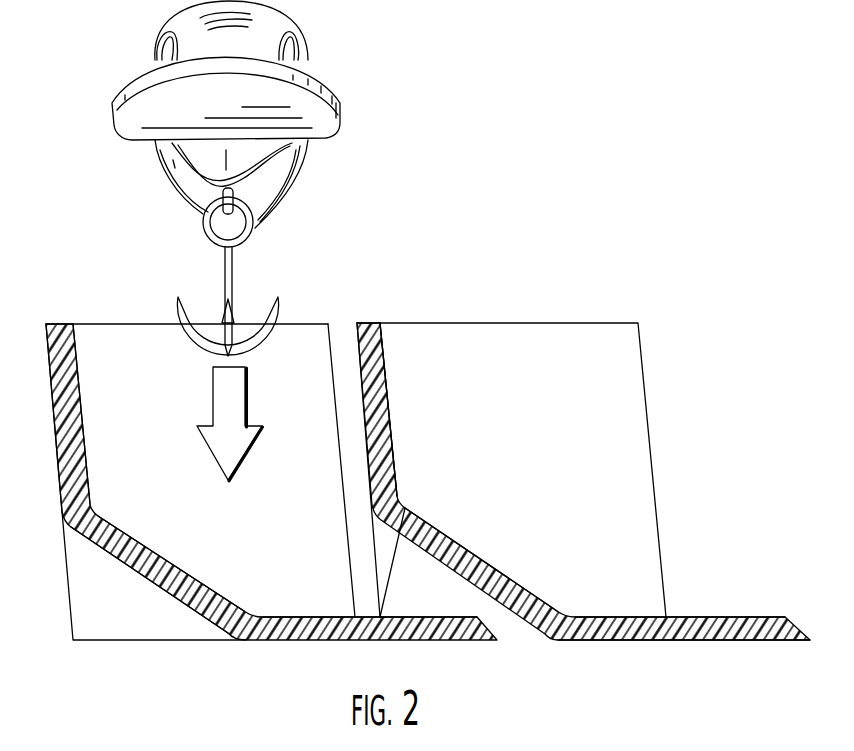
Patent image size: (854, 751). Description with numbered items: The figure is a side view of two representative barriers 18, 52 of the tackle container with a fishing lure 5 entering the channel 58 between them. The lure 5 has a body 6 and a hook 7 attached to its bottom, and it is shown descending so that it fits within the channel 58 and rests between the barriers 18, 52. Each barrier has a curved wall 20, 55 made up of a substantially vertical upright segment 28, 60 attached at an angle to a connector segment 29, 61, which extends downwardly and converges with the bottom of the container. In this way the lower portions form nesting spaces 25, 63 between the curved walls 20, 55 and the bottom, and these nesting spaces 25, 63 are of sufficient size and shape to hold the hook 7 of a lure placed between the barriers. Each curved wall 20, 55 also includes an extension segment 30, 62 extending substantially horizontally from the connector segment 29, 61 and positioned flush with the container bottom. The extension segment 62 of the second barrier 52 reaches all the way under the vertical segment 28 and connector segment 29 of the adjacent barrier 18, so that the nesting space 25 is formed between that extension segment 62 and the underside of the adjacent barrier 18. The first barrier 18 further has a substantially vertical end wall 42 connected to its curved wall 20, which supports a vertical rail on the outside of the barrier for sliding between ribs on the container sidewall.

The fishing lure 5 is at (336, 58).
The body 6 is at (182, 182).
The hook 7 is at (230, 277).
The channel 58 is at (342, 322).
The end wall 42 is at (463, 322).
The vertical segment 60 is at (80, 405).
The curved wall 55 is at (112, 527).
The connector segment 61 is at (183, 577).
The extension segment 62 is at (288, 617).
The nesting space 63 is at (86, 625).
The barrier 52 is at (210, 625).
The vertical segment 28 is at (390, 420).
The curved wall 20 is at (433, 535).
The connector segment 29 is at (495, 577).
The nesting space 25 is at (393, 605).
The extension segment 30 is at (735, 617).
The barrier 18 is at (620, 640).